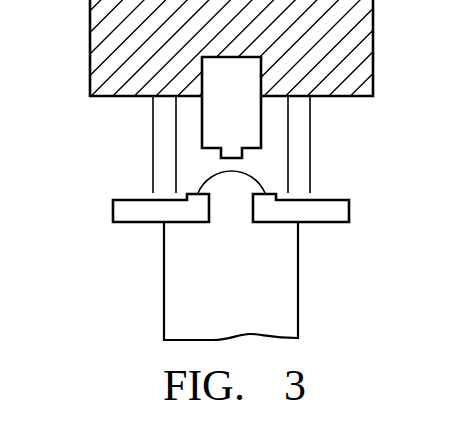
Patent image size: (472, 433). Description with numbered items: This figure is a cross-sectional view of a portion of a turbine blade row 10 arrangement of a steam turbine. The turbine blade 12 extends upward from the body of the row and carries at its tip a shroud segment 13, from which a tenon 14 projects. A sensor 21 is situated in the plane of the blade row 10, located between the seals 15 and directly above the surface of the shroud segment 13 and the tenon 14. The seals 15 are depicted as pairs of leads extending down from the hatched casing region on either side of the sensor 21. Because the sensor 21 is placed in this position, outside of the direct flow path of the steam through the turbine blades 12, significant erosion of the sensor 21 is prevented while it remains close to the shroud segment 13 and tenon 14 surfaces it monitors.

The turbine blade row 10 is at (95, 283).
The turbine blade 12 is at (272, 302).
The shroud segment 13 is at (323, 200).
The tenon 14 is at (253, 181).
The seal 15 is at (173, 166).
The sensor 21 is at (201, 114).